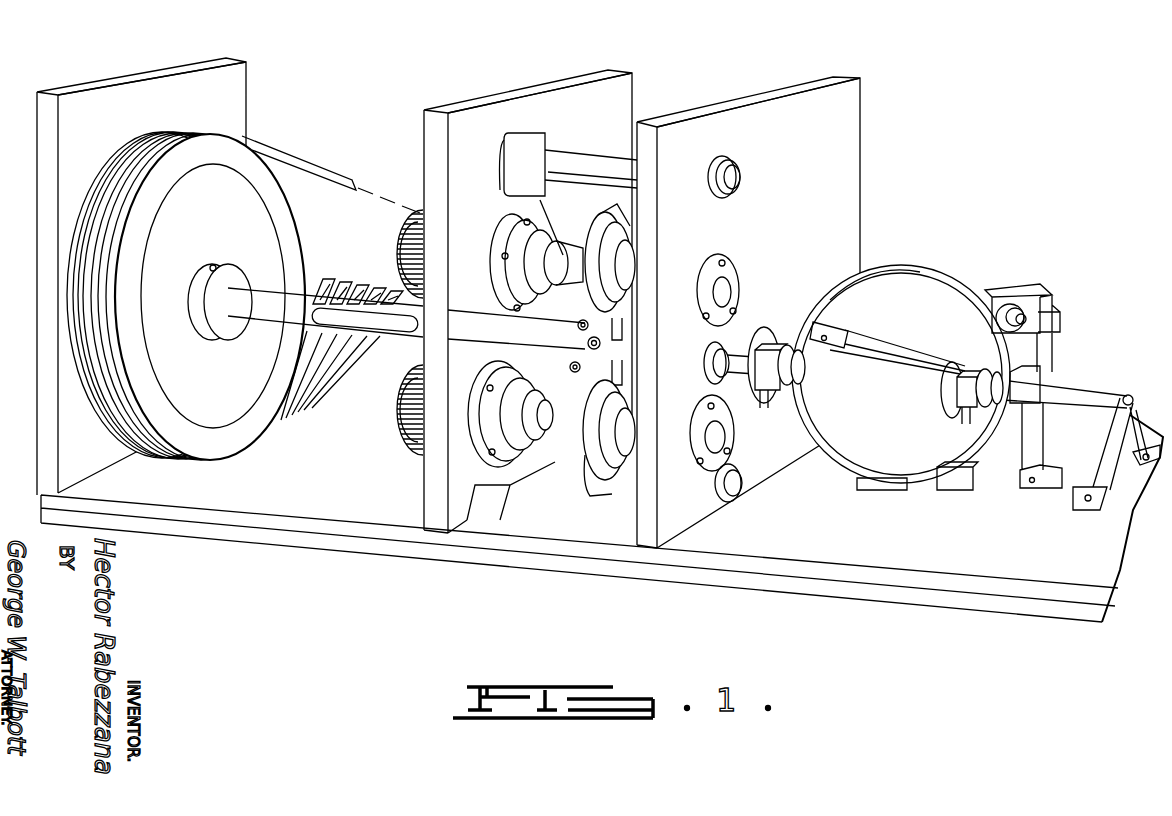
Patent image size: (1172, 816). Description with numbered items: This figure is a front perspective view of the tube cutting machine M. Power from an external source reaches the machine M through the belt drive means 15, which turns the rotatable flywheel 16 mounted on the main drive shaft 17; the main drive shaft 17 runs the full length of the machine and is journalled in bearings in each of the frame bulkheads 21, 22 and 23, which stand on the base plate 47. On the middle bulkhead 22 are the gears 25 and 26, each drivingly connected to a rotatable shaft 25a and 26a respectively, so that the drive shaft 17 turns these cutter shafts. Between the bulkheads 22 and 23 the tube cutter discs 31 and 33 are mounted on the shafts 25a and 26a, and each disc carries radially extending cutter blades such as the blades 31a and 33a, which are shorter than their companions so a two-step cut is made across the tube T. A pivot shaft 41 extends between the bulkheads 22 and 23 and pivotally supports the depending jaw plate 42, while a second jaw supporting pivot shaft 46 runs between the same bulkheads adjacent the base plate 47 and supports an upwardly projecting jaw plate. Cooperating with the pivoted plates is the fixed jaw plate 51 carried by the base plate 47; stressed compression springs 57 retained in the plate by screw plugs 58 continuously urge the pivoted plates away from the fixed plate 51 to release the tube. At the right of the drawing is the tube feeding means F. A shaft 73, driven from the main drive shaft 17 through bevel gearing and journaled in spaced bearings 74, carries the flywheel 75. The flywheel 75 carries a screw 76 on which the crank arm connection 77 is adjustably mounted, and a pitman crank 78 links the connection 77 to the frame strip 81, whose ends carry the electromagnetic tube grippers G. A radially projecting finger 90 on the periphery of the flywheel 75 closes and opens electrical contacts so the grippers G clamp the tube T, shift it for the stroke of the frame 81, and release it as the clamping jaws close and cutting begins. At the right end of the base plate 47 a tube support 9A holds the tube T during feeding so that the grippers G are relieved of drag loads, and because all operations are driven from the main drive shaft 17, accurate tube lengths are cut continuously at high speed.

The frame bulkhead 21 is at (80, 55).
The belt drive means 15 is at (304, 160).
The rotatable flywheel 16 is at (295, 215).
The main drive shaft 17 is at (367, 336).
The gear 25 is at (400, 239).
The gear 26 is at (400, 450).
The middle bulkhead 22 is at (456, 84).
The tube cutting machine M is at (521, 77).
The pivot shaft 41 is at (570, 160).
The jaw plate 42 is at (545, 205).
The tube cutter disc 31 is at (592, 236).
The rotatable shaft 25a is at (550, 277).
The screw plug 58 is at (578, 325).
The compression spring 57 is at (588, 343).
The cutter blade 31a is at (617, 333).
The cutter blade 33a is at (607, 373).
The fixed jaw plate 51 is at (511, 440).
The tube cutter disc 33 is at (609, 447).
The frame bulkhead 23 is at (800, 88).
The rotatable shaft 26a is at (718, 434).
The second jaw supporting pivot shaft 46 is at (742, 483).
The radially projecting finger 90 is at (800, 332).
The tube feeding means F is at (943, 265).
The flywheel 75 is at (882, 272).
The tube gripper G is at (770, 334).
The screw 76 is at (828, 334).
The crank arm connection 77 is at (872, 343).
The pitman crank 78 is at (907, 355).
The frame strip 81 is at (952, 366).
The shaft 73 is at (1005, 308).
The bearing 74 is at (1024, 310).
The tube T is at (1120, 372).
The support brace 9A is at (1104, 448).
The base plate 47 is at (752, 566).